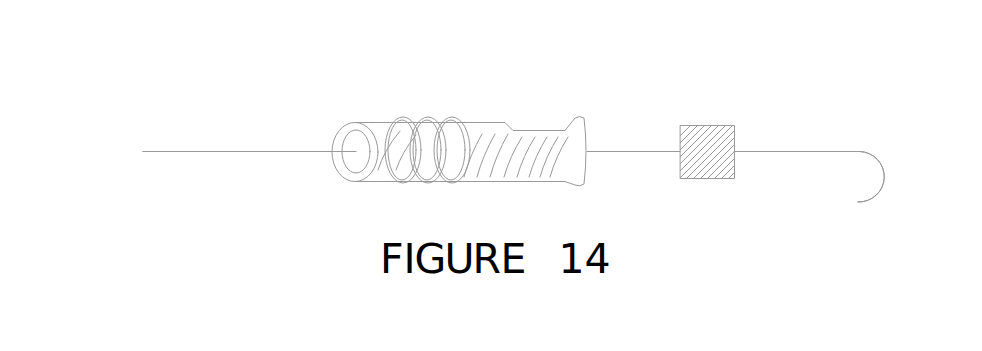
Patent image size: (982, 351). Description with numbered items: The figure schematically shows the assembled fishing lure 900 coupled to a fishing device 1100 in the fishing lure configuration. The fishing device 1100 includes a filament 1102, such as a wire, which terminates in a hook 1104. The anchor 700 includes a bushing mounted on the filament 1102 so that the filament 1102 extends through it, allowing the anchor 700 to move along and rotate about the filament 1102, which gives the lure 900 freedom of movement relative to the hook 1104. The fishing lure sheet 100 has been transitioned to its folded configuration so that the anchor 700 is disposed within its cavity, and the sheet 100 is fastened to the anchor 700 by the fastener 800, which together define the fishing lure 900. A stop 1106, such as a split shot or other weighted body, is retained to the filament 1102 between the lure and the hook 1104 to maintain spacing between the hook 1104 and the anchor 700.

The fishing device 1100 is at (163, 93).
The fishing lure 900 is at (327, 245).
The filament 1102 is at (247, 168).
The hook 1104 is at (853, 143).
The stop 1106 is at (712, 112).
The fishing lure sheet 100 is at (531, 140).
The anchor 700 is at (345, 147).
The fastener 800 is at (416, 128).